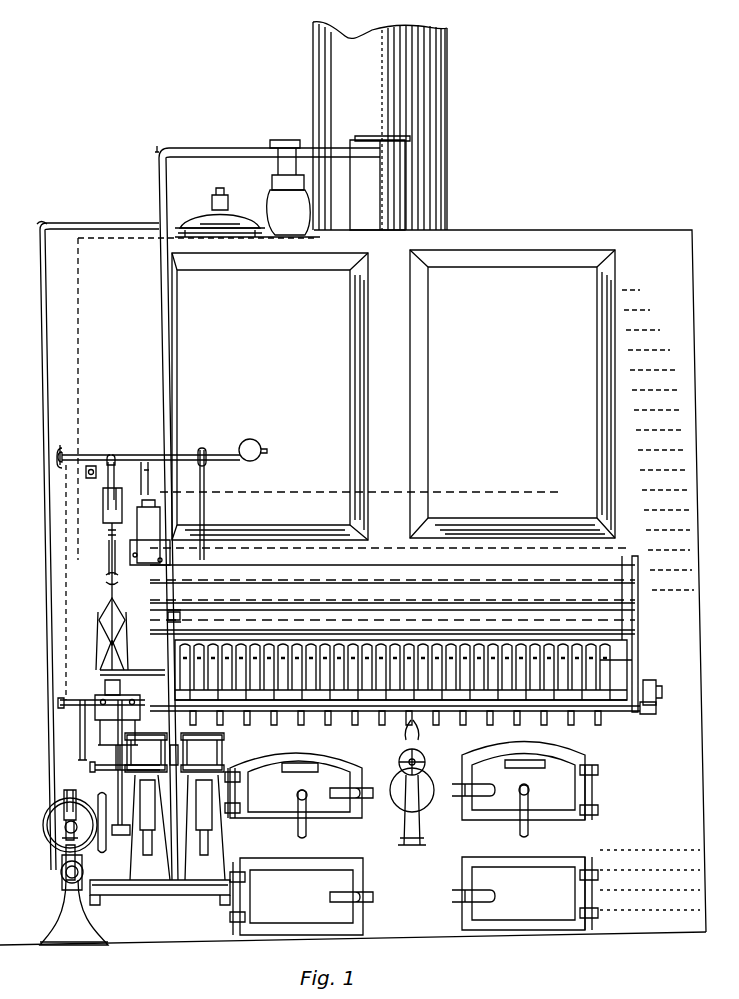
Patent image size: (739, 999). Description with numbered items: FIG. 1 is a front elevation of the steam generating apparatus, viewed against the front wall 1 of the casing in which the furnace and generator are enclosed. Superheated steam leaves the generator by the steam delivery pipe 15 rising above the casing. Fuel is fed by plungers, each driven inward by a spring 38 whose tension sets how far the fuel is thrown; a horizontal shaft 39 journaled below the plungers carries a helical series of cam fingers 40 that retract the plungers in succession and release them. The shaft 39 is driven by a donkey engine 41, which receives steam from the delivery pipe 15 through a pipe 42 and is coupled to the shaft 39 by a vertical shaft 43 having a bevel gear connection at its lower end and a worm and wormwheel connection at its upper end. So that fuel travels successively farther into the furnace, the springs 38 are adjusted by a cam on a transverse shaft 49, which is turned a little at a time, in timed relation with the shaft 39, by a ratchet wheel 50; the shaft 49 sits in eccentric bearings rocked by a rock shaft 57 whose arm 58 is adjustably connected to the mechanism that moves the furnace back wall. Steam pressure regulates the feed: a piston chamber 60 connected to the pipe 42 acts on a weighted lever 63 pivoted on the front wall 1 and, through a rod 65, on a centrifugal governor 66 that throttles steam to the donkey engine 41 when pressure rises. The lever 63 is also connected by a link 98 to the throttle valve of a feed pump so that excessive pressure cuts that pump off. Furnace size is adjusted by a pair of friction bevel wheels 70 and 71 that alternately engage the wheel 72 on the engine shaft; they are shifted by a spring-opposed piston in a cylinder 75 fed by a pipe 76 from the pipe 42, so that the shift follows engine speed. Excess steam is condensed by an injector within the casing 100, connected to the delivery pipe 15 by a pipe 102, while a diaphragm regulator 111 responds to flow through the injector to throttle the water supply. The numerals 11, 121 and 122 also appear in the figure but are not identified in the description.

The front wall 1 is at (695, 640).
The rod 11 is at (167, 540).
The steam delivery pipe 15 is at (405, 188).
The spring 38 is at (600, 665).
The horizontal shaft 39 is at (643, 634).
The cam fingers 40 is at (280, 724).
The donkey engine 41 is at (222, 740).
The pipe 42 is at (167, 352).
The vertical shaft 43 is at (95, 767).
The transverse shaft 49 is at (461, 782).
The ratchet wheel 50 is at (650, 708).
The rock shaft 57 is at (60, 705).
The arm 58 is at (80, 724).
The piston chamber 60 is at (137, 530).
The weighted lever 63 is at (140, 455).
The rod 65 is at (112, 560).
The centrifugal governor 66 is at (97, 640).
The bevel friction wheel 70 is at (43, 816).
The bevel friction wheel 71 is at (56, 838).
The bevel wheel 72 is at (115, 781).
The cylinder 75 is at (58, 872).
The pipe 76 is at (148, 898).
The link 98 is at (62, 516).
The casing 100 is at (275, 190).
The pipe 102 is at (374, 183).
The diaphragm regulator 111 is at (208, 215).
The door handle 121 is at (298, 798).
The door 122 is at (340, 762).